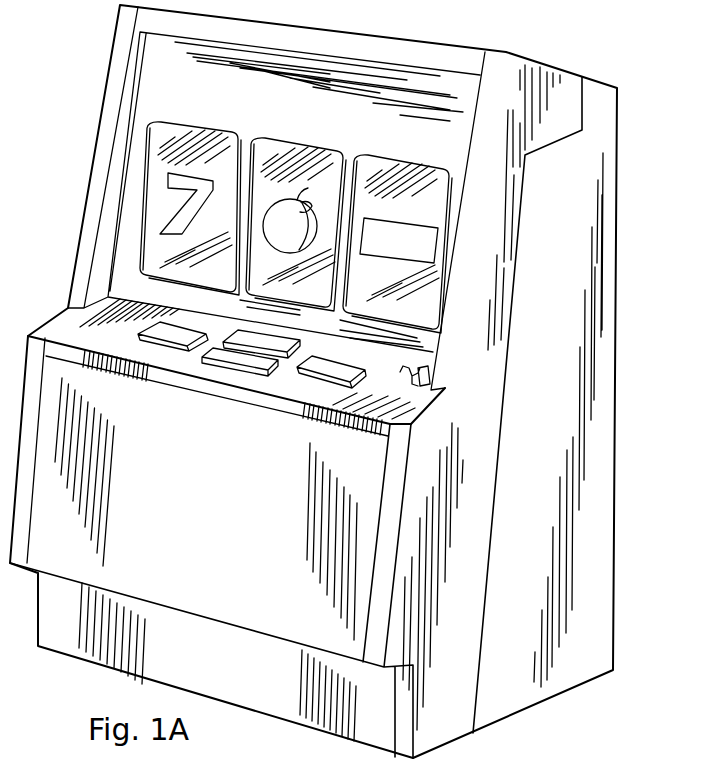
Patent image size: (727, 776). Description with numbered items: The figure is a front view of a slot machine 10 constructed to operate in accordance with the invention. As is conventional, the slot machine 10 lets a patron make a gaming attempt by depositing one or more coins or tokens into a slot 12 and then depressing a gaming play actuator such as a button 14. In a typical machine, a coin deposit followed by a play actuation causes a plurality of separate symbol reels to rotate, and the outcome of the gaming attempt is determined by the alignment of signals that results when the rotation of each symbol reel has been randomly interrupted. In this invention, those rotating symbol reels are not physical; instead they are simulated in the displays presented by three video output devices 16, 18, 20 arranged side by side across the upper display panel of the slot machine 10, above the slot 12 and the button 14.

The slot machine 10 is at (618, 360).
The slot 12 is at (422, 368).
The button 14 is at (233, 371).
The video output device 16 is at (208, 130).
The video output device 18 is at (313, 153).
The video output device 20 is at (418, 167).